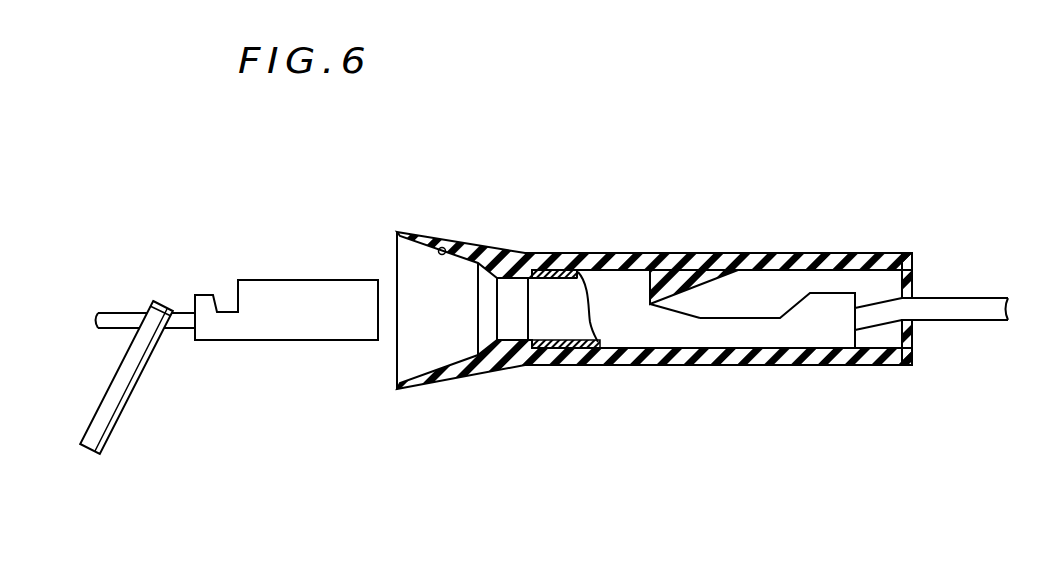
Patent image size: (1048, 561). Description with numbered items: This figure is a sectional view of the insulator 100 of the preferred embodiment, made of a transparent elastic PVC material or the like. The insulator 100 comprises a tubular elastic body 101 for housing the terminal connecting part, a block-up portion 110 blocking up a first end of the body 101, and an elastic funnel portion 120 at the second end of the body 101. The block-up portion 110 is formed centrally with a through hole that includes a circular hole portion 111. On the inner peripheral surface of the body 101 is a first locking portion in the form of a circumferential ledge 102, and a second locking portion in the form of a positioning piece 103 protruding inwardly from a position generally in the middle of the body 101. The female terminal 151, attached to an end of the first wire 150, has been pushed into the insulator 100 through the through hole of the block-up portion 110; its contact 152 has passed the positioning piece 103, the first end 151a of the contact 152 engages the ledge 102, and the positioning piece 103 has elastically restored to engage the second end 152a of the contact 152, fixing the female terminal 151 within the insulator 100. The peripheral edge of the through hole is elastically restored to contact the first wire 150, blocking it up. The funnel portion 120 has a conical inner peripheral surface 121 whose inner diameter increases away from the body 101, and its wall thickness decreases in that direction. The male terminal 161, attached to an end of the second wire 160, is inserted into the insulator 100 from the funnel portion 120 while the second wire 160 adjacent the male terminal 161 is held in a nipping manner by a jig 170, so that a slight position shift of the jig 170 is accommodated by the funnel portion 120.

The insulator 100 is at (684, 299).
The tubular elastic body 101 is at (680, 365).
The circumferential ledge 102 is at (513, 270).
The positioning piece 103 is at (645, 306).
The block-up portion 110 is at (912, 281).
The circular hole portion 111 is at (937, 307).
The funnel portion 120 is at (440, 383).
The conical inner peripheral surface 121 is at (442, 248).
The first wire 150 is at (980, 306).
The female terminal 151 is at (750, 332).
The first end of contact 151a is at (520, 358).
The contact 152 is at (622, 288).
The second end of contact 152a is at (651, 271).
The second wire 160 is at (125, 320).
The male terminal 161 is at (273, 328).
The jig 170 is at (115, 392).